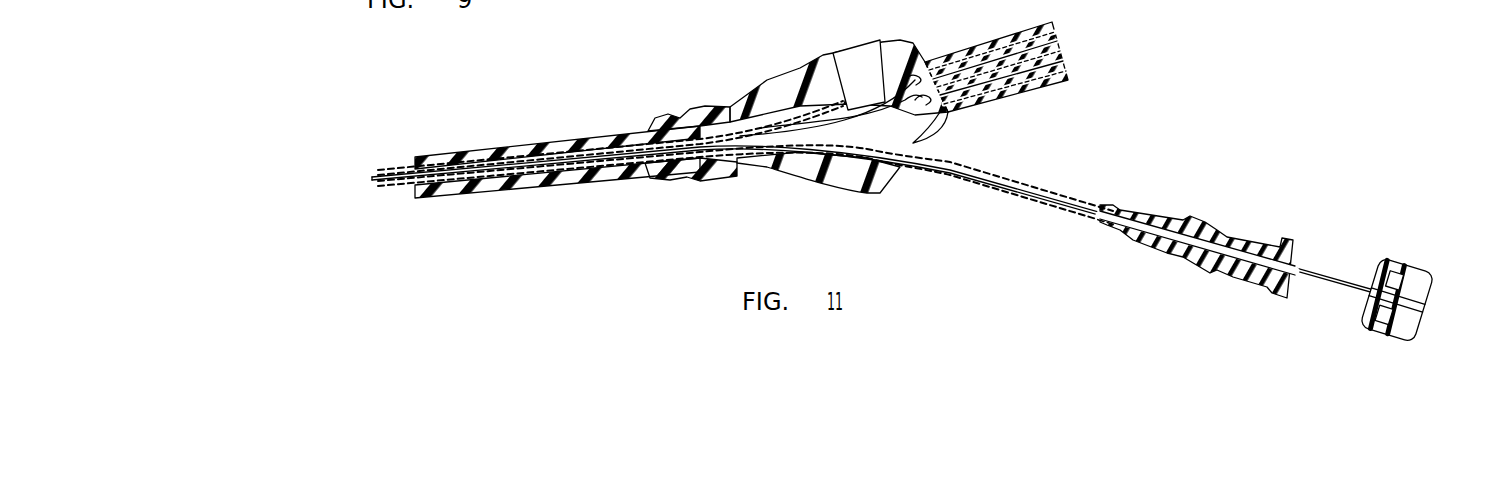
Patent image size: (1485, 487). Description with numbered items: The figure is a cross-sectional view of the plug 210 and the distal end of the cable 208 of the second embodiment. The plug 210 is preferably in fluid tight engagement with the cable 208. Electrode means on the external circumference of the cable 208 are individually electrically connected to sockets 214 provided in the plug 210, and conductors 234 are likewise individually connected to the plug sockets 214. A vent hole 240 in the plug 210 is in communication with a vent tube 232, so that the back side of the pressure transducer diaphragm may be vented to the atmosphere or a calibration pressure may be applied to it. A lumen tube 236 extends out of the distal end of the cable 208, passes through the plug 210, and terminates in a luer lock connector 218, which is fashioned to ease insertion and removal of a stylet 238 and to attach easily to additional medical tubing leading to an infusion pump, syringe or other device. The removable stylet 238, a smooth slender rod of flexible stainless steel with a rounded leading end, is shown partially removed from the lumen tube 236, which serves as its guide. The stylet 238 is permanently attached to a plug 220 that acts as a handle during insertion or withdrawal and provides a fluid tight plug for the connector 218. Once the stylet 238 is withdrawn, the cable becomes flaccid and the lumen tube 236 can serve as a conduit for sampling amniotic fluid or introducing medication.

The plug 210 is at (686, 81).
The cable 208 is at (517, 152).
The vent tube 232 is at (790, 107).
The vent hole 240 is at (862, 52).
The sockets 214 is at (1058, 33).
The conductors 234 is at (933, 110).
The lumen tube 236 is at (402, 168).
The removable stylet 238 is at (372, 177).
The luer lock connector 218 is at (1197, 217).
The plug 220 is at (1417, 267).